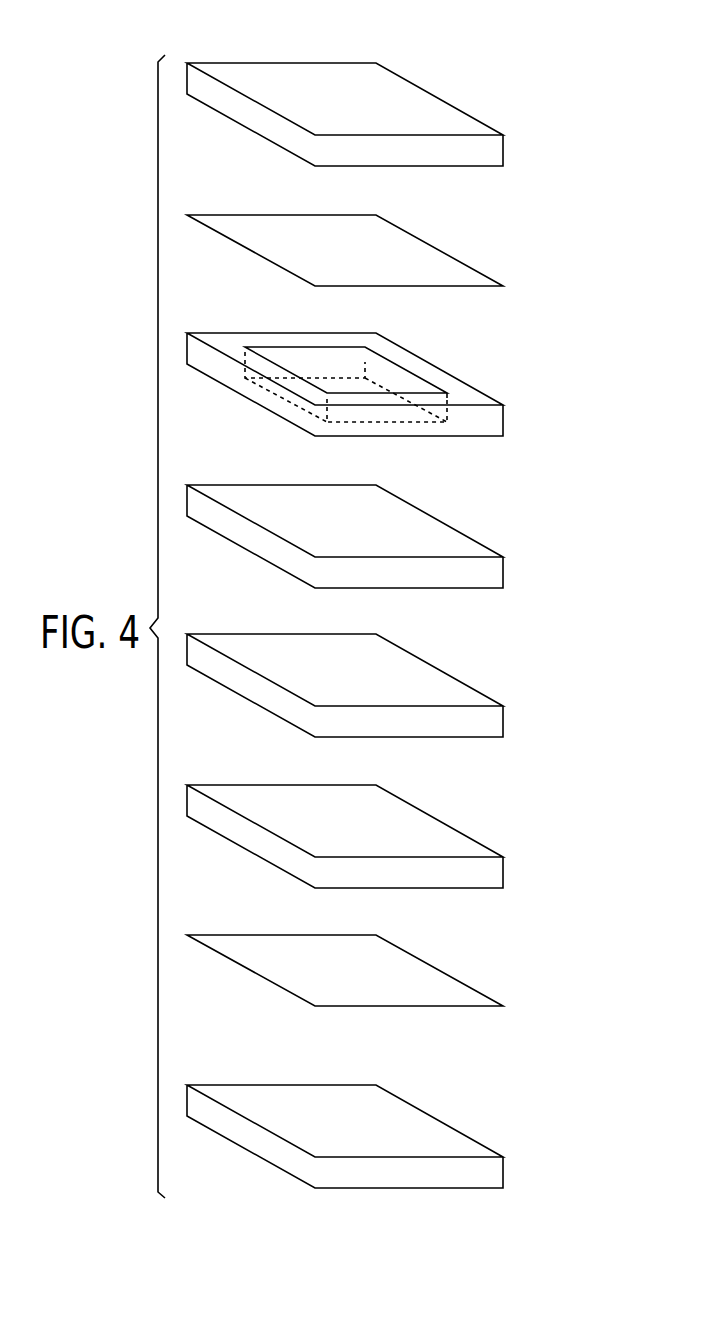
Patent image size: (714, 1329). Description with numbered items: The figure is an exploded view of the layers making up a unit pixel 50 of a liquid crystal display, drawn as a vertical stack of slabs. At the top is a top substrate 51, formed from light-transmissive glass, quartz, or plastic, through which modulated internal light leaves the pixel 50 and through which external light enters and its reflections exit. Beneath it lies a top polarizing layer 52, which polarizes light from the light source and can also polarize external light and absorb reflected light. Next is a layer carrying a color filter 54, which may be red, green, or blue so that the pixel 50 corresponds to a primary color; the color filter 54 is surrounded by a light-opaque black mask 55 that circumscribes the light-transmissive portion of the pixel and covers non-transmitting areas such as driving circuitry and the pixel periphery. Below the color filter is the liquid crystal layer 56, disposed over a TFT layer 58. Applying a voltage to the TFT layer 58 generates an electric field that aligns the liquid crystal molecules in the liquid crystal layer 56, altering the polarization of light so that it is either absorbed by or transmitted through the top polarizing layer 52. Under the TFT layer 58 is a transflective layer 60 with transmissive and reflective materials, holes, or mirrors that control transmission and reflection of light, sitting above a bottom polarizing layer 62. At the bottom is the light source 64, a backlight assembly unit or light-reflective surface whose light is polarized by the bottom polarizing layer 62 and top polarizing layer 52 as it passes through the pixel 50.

The pixel 50 is at (525, 53).
The top substrate 51 is at (476, 119).
The top polarizing layer 52 is at (476, 266).
The color filter 54 is at (383, 357).
The black mask 55 is at (476, 389).
The liquid crystal layer 56 is at (476, 541).
The TFT layer 58 is at (476, 690).
The transflective layer 60 is at (476, 841).
The bottom polarizing layer 62 is at (476, 986).
The light source 64 is at (476, 1141).